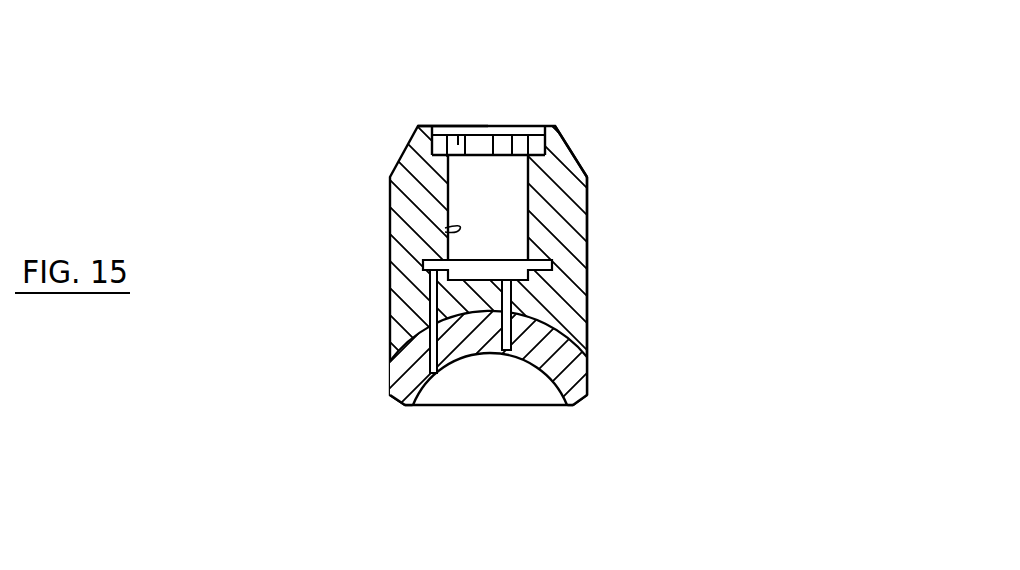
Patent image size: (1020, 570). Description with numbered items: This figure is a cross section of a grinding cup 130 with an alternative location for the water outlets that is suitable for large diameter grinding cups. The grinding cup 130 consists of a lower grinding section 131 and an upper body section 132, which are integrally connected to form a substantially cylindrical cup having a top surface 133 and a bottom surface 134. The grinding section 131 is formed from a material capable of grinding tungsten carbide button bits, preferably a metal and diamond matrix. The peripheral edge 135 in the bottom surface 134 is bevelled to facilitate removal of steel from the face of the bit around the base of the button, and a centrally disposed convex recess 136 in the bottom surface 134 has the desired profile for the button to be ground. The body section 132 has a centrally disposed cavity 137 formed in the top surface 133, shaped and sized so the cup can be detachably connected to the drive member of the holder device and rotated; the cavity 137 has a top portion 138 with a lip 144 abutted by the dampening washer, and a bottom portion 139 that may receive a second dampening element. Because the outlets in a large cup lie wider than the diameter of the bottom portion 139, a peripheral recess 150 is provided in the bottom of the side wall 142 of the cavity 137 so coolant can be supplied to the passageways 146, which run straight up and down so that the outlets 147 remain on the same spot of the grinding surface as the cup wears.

The grinding cup 130 is at (640, 222).
The lower grinding section 131 is at (402, 383).
The upper body section 132 is at (588, 213).
The top surface 133 is at (553, 126).
The bottom surface 134 is at (415, 405).
The peripheral edge 135 is at (583, 402).
The convex recess 136 is at (523, 390).
The cavity 137 is at (500, 163).
The top portion 138 is at (455, 127).
The bottom portion 139 is at (490, 203).
The side wall 142 is at (445, 228).
The passageways 144 is at (482, 128).
The passageways 146 is at (430, 310).
The outlets 147 is at (507, 350).
The peripheral recess 150 is at (552, 265).